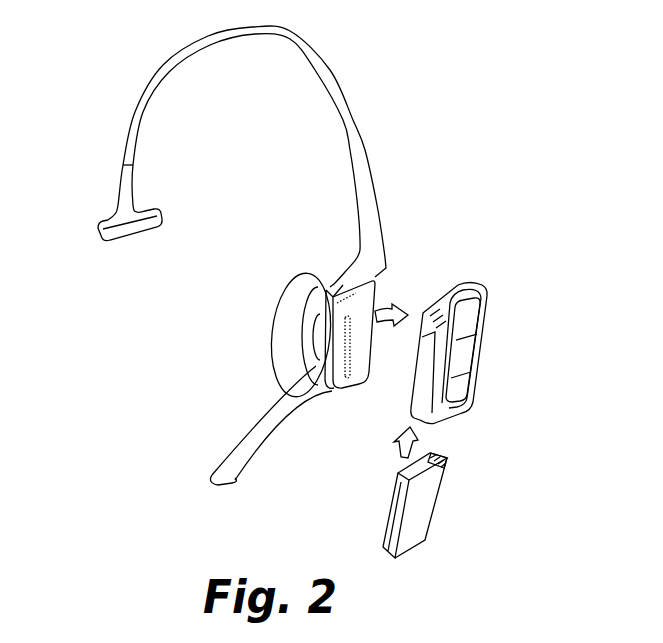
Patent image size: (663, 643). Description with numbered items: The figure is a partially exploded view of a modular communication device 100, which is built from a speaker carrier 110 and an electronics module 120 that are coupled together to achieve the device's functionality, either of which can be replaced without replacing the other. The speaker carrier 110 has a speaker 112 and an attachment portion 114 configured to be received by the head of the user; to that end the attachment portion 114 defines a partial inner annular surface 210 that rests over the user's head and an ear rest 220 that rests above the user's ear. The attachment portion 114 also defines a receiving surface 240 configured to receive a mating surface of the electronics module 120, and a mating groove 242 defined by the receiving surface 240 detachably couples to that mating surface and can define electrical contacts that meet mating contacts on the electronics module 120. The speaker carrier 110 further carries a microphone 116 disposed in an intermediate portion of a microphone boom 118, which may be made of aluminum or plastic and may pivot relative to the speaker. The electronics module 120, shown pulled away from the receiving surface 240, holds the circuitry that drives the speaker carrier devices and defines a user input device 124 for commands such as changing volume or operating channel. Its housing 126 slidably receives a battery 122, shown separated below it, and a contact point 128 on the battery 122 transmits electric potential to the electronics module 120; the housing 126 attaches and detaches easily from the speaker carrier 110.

The communication device 100 is at (424, 79).
The speaker carrier 110 is at (120, 125).
The speaker 112 is at (283, 322).
The attachment portion 114 is at (321, 58).
The microphone 116 is at (210, 473).
The microphone boom 118 is at (255, 440).
The electronics module 120 is at (565, 349).
The battery 122 is at (465, 500).
The user input device 124 is at (462, 353).
The housing 126 is at (486, 286).
The contact point 128 is at (444, 455).
The partial inner annular surface 210 is at (137, 163).
The ear rest 220 is at (131, 232).
The receiving surface 240 is at (332, 393).
The mating groove 242 is at (349, 381).